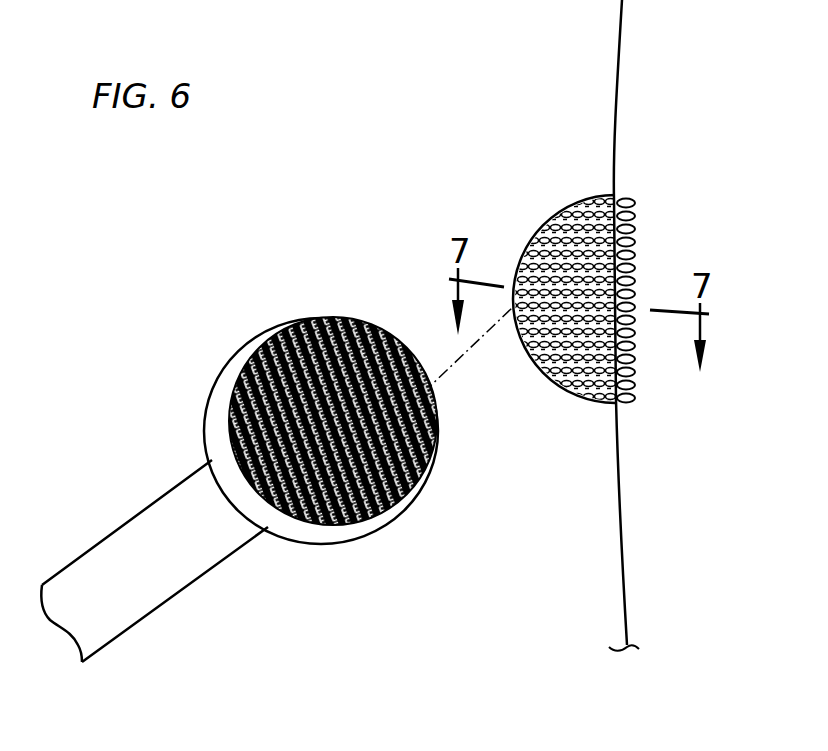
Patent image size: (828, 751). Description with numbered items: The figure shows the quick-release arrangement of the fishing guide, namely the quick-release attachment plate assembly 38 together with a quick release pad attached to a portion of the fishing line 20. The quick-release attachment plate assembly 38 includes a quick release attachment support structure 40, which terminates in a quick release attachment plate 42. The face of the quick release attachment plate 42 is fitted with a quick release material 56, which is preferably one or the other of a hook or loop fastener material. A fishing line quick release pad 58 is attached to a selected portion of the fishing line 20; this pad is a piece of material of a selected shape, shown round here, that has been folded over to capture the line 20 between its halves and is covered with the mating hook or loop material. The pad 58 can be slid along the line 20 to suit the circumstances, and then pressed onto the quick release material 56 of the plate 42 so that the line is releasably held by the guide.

The fishing line 20 is at (617, 80).
The quick-release attachment plate assembly 38 is at (221, 482).
The quick release attachment support structure 40 is at (100, 538).
The quick release attachment plate 42 is at (243, 350).
The quick release material 56 is at (352, 322).
The fishing line quick release pad 58 is at (650, 223).